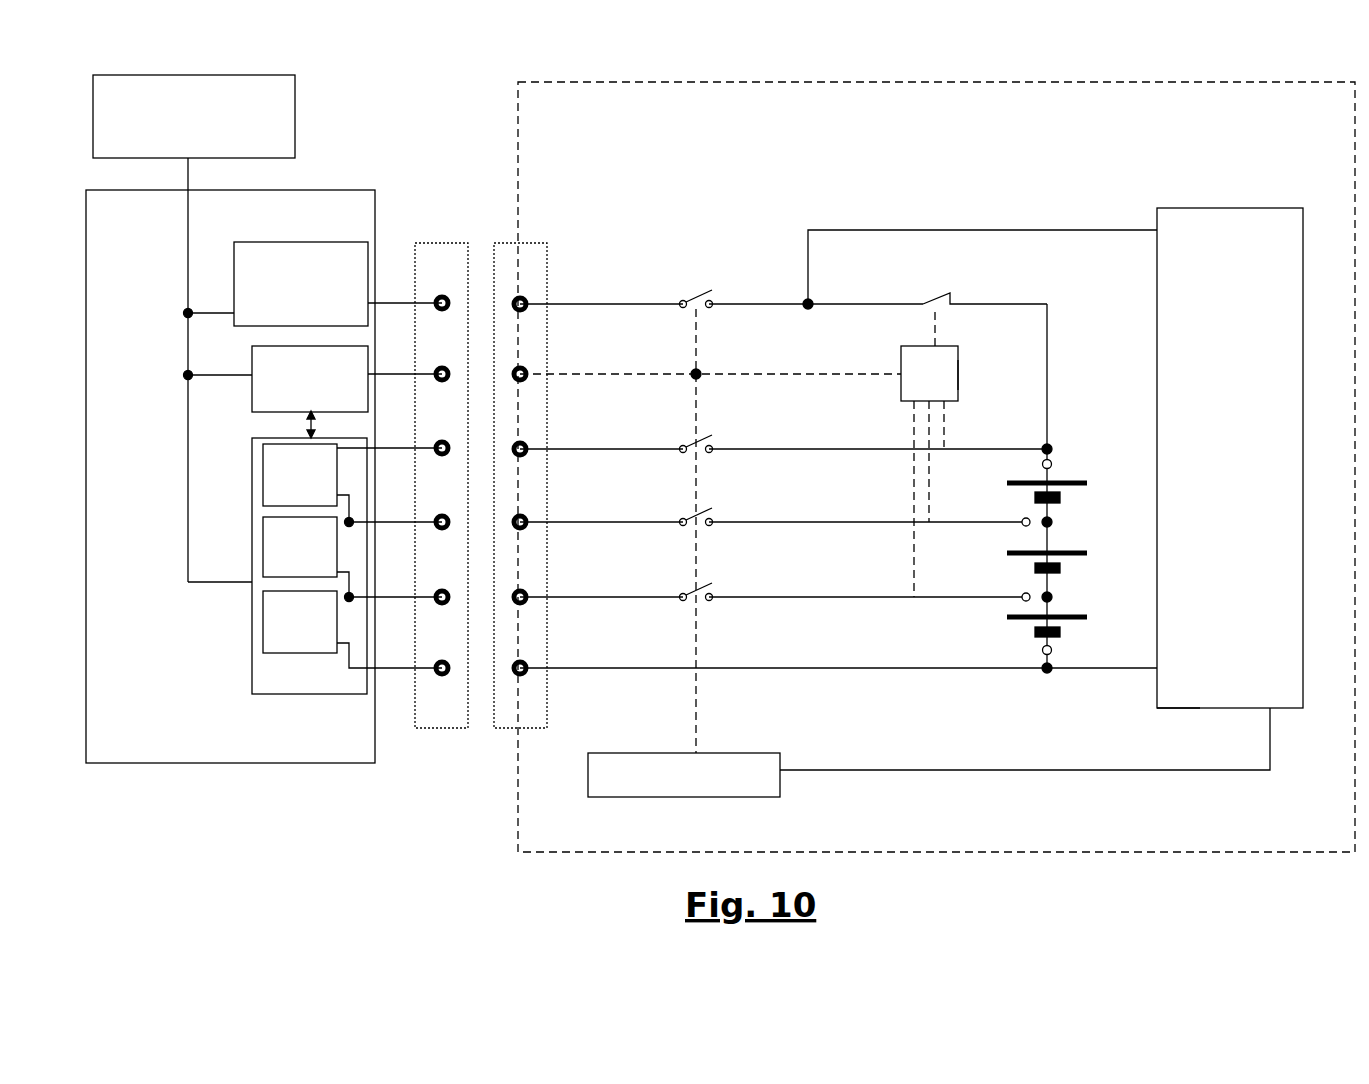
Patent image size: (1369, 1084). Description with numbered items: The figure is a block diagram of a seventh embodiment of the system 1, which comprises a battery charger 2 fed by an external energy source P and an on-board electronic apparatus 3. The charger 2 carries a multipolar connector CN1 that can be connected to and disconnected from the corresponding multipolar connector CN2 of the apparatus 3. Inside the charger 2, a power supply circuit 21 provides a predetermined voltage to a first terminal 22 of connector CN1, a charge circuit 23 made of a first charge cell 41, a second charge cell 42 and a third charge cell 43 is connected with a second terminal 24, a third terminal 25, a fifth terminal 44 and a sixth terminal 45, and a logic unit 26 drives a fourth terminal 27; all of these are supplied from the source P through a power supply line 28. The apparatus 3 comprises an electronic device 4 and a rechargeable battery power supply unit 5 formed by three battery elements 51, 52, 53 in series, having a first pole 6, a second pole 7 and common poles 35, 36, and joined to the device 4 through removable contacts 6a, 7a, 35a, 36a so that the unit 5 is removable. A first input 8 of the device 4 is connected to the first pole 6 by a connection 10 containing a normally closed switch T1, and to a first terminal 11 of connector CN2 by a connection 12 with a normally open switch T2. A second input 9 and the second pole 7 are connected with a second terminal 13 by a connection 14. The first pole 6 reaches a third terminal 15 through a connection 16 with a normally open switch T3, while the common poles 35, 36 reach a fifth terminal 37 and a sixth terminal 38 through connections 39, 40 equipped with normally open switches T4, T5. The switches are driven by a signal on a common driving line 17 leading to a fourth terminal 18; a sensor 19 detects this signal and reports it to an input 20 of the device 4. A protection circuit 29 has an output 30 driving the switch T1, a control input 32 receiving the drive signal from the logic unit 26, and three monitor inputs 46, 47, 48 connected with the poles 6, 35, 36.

The system 1 is at (196, 907).
The battery charger 2 is at (230, 500).
The on-board electronic apparatus 3 is at (936, 490).
The electronic device 4 is at (1142, 723).
The rechargeable battery power supply unit 5 is at (1042, 546).
The first pole 6 is at (1068, 428).
The removable contact 6a is at (1076, 451).
The second pole 7 is at (1011, 690).
The removable contact 7a is at (1079, 647).
The first input 8 is at (1055, 440).
The second input 9 is at (1102, 637).
The connection 10 is at (1074, 373).
The first terminal 11 is at (555, 241).
The connection 12 is at (721, 256).
The second terminal 13 is at (559, 694).
The connection 14 is at (783, 649).
The third terminal 15 is at (557, 471).
The connection 16 is at (783, 433).
The common driving line 17 is at (710, 356).
The fourth terminal 18 is at (557, 355).
The sensor 19 is at (726, 786).
The input 20 is at (1052, 739).
The power supply circuit 21 is at (313, 268).
The first terminal 22 is at (406, 231).
The charge circuit 23 is at (268, 577).
The second terminal 24 is at (412, 695).
The third terminal 25 is at (417, 421).
The logic unit 26 is at (313, 392).
The fourth terminal 27 is at (419, 352).
The power supply line 28 is at (186, 478).
The protection circuit 29 is at (994, 363).
The output 30 is at (971, 329).
The control input 32 is at (901, 367).
The common pole 35 is at (1082, 511).
The removable contact 35a is at (991, 510).
The common pole 36 is at (1078, 584).
The removable contact 36a is at (979, 611).
The fifth terminal 37 is at (557, 543).
The sixth terminal 38 is at (557, 618).
The connection 39 is at (771, 501).
The connection 40 is at (771, 575).
The first charge cell 41 is at (317, 483).
The second charge cell 42 is at (273, 557).
The third charge cell 43 is at (317, 629).
The fifth terminal 44 is at (397, 498).
The sixth terminal 45 is at (397, 577).
The monitor input 46 is at (977, 424).
The monitor input 47 is at (895, 461).
The monitor input 48 is at (888, 499).
The first battery element 51 is at (1019, 482).
The second battery element 52 is at (1014, 569).
The third battery element 53 is at (1013, 638).
The external energy source P is at (218, 225).
The normally closed switch T1 is at (962, 281).
The normally open switch T2 is at (674, 496).
The normally open switch T3 is at (669, 425).
The normally open switch T4 is at (673, 501).
The normally open switch T5 is at (674, 576).
The multipolar connector CN1 is at (402, 551).
The multipolar connector CN2 is at (473, 563).